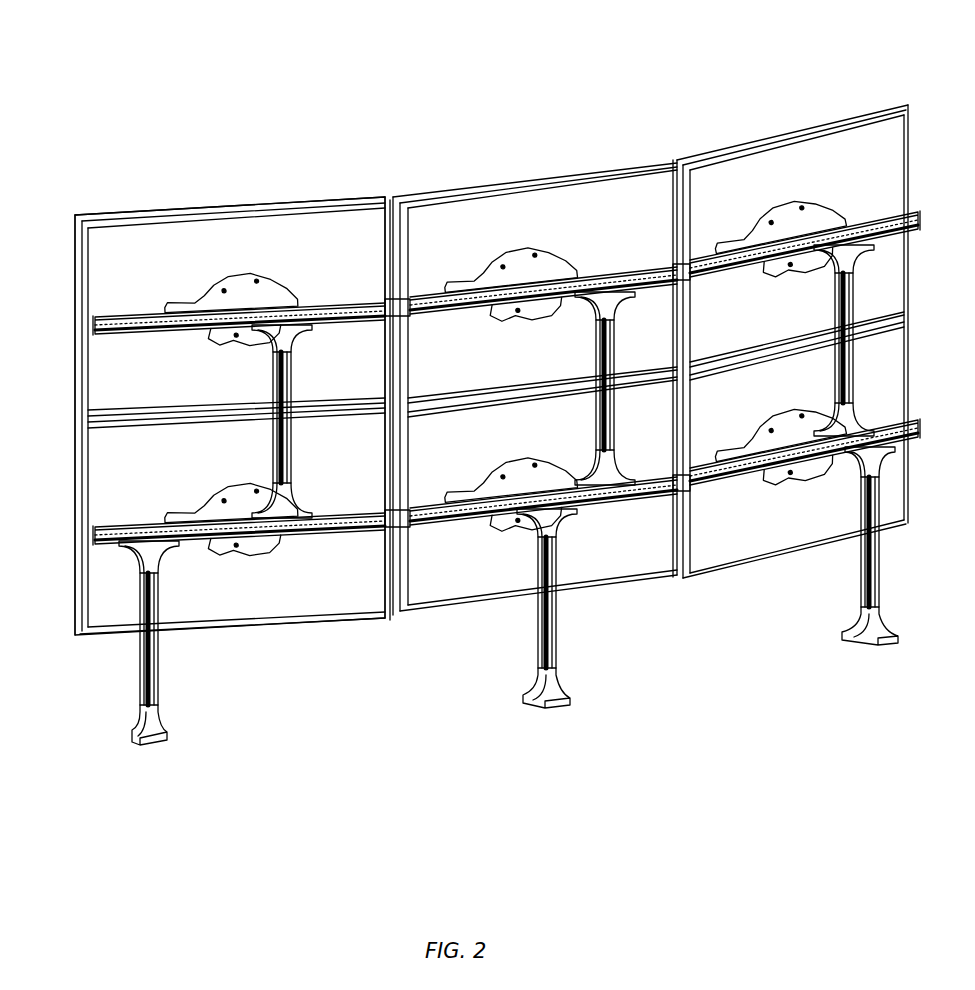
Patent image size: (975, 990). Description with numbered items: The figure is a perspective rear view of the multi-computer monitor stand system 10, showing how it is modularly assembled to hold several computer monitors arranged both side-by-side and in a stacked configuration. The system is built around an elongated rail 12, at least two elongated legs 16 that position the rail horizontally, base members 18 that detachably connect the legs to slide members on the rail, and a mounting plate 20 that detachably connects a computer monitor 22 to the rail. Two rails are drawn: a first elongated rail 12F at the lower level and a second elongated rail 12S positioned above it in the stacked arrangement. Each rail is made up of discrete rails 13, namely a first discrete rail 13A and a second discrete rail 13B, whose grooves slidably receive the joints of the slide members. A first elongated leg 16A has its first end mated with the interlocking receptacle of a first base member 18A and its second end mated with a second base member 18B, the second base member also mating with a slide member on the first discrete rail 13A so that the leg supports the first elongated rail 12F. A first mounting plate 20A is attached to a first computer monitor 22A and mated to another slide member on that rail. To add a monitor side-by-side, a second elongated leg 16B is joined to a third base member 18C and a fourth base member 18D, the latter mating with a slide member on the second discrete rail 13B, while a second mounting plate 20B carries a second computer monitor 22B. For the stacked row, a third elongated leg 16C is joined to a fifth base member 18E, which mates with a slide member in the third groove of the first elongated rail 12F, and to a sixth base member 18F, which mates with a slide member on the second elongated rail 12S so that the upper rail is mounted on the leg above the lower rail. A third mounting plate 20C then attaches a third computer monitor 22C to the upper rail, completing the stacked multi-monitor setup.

The multi-computer monitor stand system 10 is at (622, 92).
The elongated rail 12 is at (471, 380).
The second elongated rail 12S is at (93, 333).
The first elongated rail 12F is at (93, 525).
The discrete rail 13 is at (491, 370).
The first discrete rail 13A is at (132, 316).
The second discrete rail 13B is at (453, 290).
The elongated leg 16 is at (467, 491).
The first elongated leg 16A is at (138, 667).
The second elongated leg 16B is at (537, 630).
The third elongated leg 16C is at (273, 383).
The base member 18 is at (508, 502).
The first base member 18A is at (155, 713).
The second base member 18B is at (170, 557).
The third base member 18C is at (563, 680).
The fourth base member 18D is at (553, 517).
The fifth base member 18E is at (293, 500).
The sixth base member 18F is at (300, 337).
The mounting plate 20 is at (497, 376).
The first mounting plate 20A is at (227, 500).
The second mounting plate 20B is at (537, 470).
The third mounting plate 20C is at (250, 300).
The computer monitor 22 is at (351, 302).
The first computer monitor 22A is at (100, 443).
The second computer monitor 22B is at (445, 423).
The third computer monitor 22C is at (258, 235).